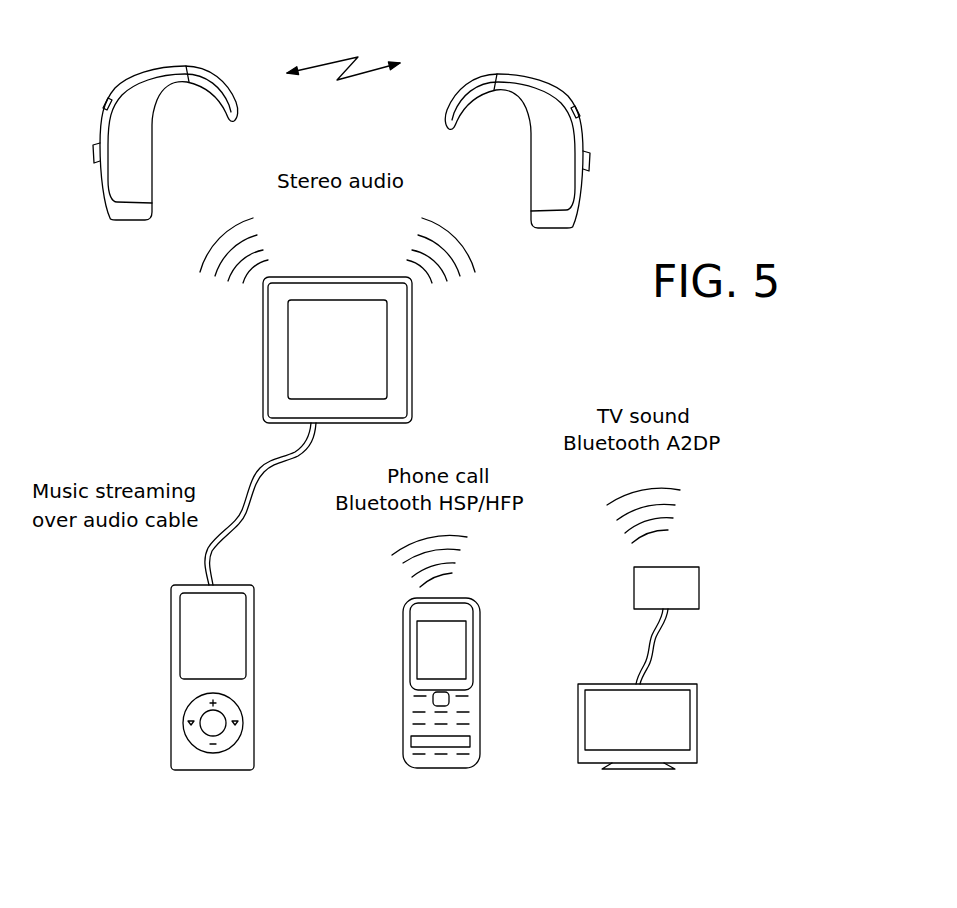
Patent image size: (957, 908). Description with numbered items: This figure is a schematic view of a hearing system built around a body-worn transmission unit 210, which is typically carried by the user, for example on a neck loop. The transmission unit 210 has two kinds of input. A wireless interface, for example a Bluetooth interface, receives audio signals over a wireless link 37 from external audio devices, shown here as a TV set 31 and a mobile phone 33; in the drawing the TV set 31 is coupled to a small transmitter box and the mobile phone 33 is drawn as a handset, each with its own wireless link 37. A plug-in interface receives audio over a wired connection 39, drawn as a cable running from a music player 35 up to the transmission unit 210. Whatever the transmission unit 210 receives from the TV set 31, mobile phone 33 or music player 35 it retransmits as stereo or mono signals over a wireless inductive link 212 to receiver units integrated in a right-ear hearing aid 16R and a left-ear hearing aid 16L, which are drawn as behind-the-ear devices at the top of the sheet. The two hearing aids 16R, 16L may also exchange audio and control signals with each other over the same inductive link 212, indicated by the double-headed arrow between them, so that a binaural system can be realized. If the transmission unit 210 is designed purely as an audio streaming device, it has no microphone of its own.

The right-ear hearing aid 16R is at (127, 84).
The left-ear hearing aid 16L is at (563, 90).
The wireless inductive link 212 is at (352, 58).
The transmission unit 210 is at (315, 352).
The wired connection 39 is at (247, 518).
The music player 35 is at (167, 678).
The mobile phone 33 is at (400, 670).
The wireless link 37 is at (438, 553).
The TV set 31 is at (675, 647).